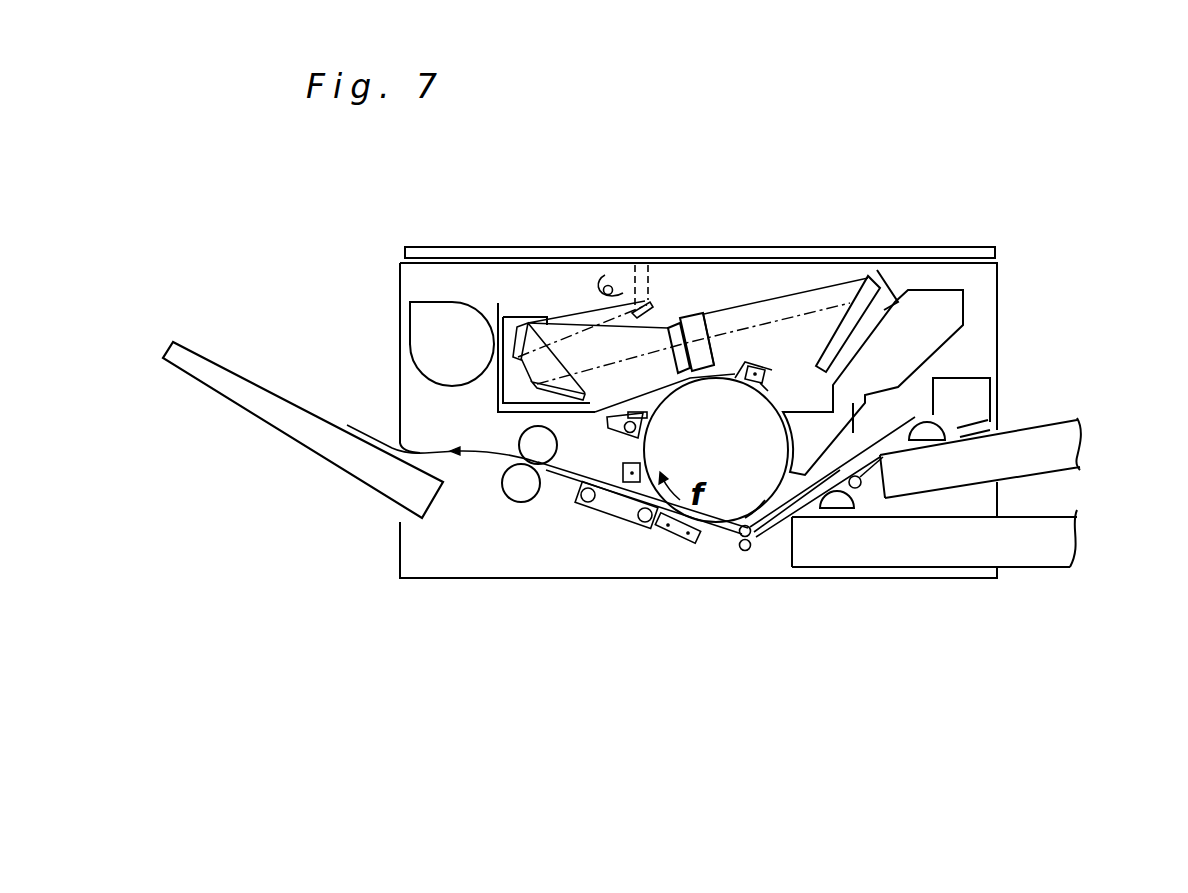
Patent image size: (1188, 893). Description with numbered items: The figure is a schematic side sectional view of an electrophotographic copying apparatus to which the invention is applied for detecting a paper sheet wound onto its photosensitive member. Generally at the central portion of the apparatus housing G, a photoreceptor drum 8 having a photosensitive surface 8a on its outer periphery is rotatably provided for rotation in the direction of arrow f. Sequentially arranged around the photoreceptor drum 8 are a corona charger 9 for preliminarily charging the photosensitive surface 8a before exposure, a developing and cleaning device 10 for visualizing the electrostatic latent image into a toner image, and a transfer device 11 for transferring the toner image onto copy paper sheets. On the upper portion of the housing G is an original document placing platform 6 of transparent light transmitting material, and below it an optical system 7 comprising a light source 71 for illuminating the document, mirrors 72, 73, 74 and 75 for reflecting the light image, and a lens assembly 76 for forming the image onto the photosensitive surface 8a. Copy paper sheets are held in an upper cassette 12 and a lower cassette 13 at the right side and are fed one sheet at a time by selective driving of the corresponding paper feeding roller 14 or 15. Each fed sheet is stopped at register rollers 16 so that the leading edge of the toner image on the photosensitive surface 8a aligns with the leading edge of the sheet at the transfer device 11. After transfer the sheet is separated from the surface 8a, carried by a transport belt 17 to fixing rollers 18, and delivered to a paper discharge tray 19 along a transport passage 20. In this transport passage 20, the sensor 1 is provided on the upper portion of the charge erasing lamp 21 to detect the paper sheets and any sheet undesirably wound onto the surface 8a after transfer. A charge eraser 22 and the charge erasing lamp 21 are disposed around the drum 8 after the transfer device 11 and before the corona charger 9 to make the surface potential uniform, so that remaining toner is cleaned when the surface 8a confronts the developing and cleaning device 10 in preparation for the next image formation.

The apparatus housing G is at (1003, 290).
The sensor 1 is at (620, 411).
The original document placing platform 6 is at (708, 268).
The optical system 7 is at (668, 312).
The photoreceptor drum 8 is at (730, 503).
The photosensitive surface 8a is at (763, 500).
The corona charger 9 is at (762, 392).
The developing and cleaning device 10 is at (868, 412).
The transfer device 11 is at (672, 542).
The cassette 12 is at (1070, 433).
The cassette 13 is at (1037, 563).
The paper feeding roller 14 is at (933, 430).
The paper feeding roller 15 is at (838, 503).
The register rollers 16 is at (748, 551).
The transport belt 17 is at (627, 523).
The fixing rollers 18 is at (513, 490).
The paper discharge tray 19 is at (325, 453).
The transport passage 20 is at (448, 455).
The charge erasing lamp 21 is at (608, 428).
The charge eraser 22 is at (626, 482).
The light source 71 is at (598, 284).
The mirror 72 is at (645, 306).
The mirror 73 is at (518, 318).
The mirror 74 is at (498, 392).
The mirror 75 is at (884, 286).
The lens assembly 76 is at (703, 313).